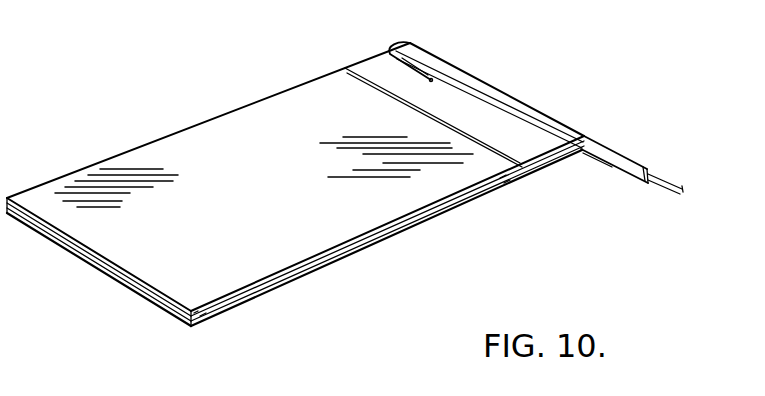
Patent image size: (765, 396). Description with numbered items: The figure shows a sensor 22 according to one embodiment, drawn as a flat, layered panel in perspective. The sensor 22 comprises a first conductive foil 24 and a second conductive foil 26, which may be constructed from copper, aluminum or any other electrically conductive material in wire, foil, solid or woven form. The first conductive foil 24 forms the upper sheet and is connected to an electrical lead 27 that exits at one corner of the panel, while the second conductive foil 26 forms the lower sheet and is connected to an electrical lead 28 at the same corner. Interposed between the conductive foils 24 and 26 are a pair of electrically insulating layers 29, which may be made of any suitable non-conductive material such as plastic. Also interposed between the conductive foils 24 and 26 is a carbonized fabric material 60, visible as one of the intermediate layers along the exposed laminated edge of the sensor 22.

The sensor 22 is at (172, 104).
The first conductive foil 24 is at (277, 192).
The second conductive foil 26 is at (245, 307).
The electrical lead 27 is at (628, 148).
The electrical lead 28 is at (602, 161).
The electrically insulating layers 29 is at (200, 328).
The carbonized fabric material 60 is at (370, 247).